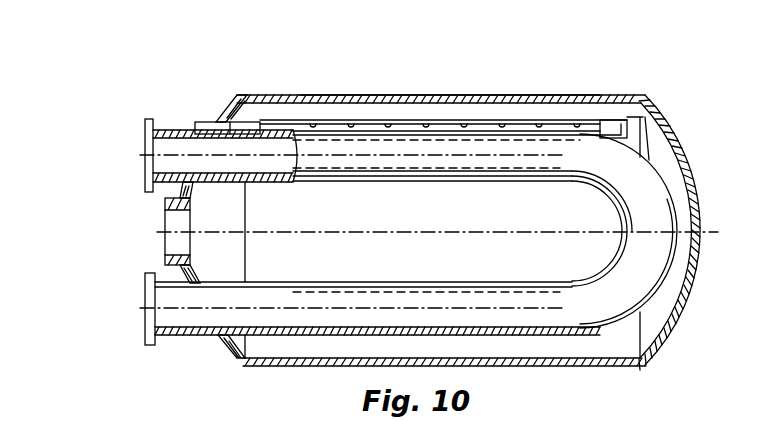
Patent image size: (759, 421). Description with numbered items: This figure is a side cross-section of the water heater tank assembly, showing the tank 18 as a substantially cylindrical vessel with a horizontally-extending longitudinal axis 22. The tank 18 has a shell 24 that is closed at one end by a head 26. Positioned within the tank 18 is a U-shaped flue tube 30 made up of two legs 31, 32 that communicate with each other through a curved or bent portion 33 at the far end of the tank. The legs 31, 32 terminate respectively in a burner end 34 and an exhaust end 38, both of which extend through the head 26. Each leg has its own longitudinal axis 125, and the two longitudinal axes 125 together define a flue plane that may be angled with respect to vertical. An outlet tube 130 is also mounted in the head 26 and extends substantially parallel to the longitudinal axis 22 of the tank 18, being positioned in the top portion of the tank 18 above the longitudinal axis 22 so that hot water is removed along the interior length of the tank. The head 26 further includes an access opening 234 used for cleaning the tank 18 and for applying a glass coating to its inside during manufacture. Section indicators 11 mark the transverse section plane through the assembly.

The tank 18 is at (477, 94).
The shell 24 is at (384, 95).
The outlet tube 130 is at (333, 122).
The section line 11 is at (190, 115).
The exhaust end 38 is at (147, 135).
The leg 32 is at (343, 174).
The U-shaped flue tube 30 is at (645, 193).
The curved or bent portion 33 is at (647, 262).
The longitudinal axis 125 is at (407, 157).
The leg 31 is at (340, 284).
The burner end 34 is at (146, 318).
The head 26 is at (228, 348).
The access opening 234 is at (165, 243).
The longitudinal axis 22 is at (718, 232).